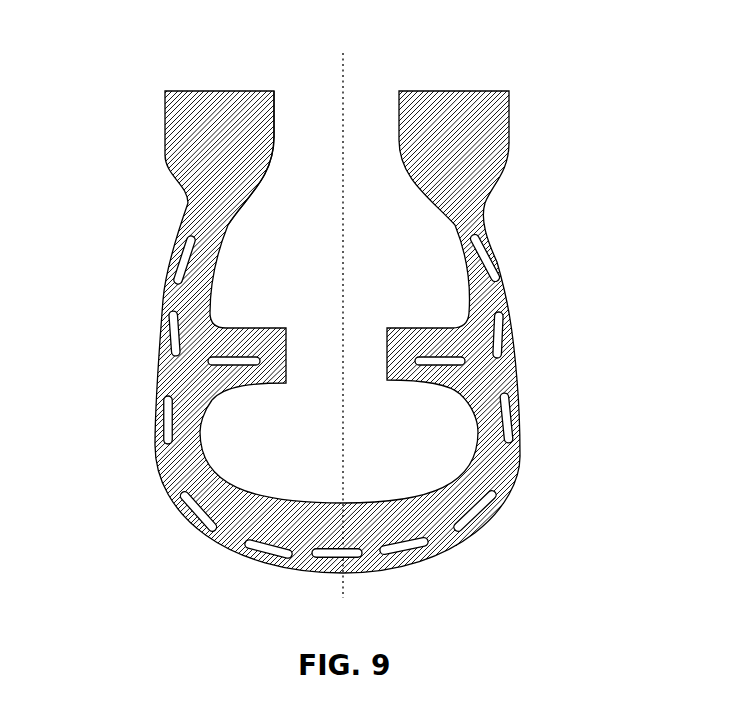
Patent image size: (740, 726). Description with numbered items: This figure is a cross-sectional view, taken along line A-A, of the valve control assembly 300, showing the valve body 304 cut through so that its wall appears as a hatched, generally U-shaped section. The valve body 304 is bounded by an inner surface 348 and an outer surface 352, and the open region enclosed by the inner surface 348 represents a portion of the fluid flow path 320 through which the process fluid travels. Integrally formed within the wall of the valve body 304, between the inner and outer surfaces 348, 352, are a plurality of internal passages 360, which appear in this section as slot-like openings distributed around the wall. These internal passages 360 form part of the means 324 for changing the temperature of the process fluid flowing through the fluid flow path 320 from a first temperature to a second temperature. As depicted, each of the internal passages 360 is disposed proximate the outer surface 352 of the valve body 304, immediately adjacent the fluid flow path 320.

The valve control assembly 300 is at (112, 70).
The valve body 304 is at (446, 91).
The fluid flow path 320 is at (330, 449).
The means for changing the temperature of the process fluid 324 is at (490, 516).
The inner surface 348 is at (277, 118).
The outer surface 352 is at (165, 120).
The internal passage 360 is at (168, 340).